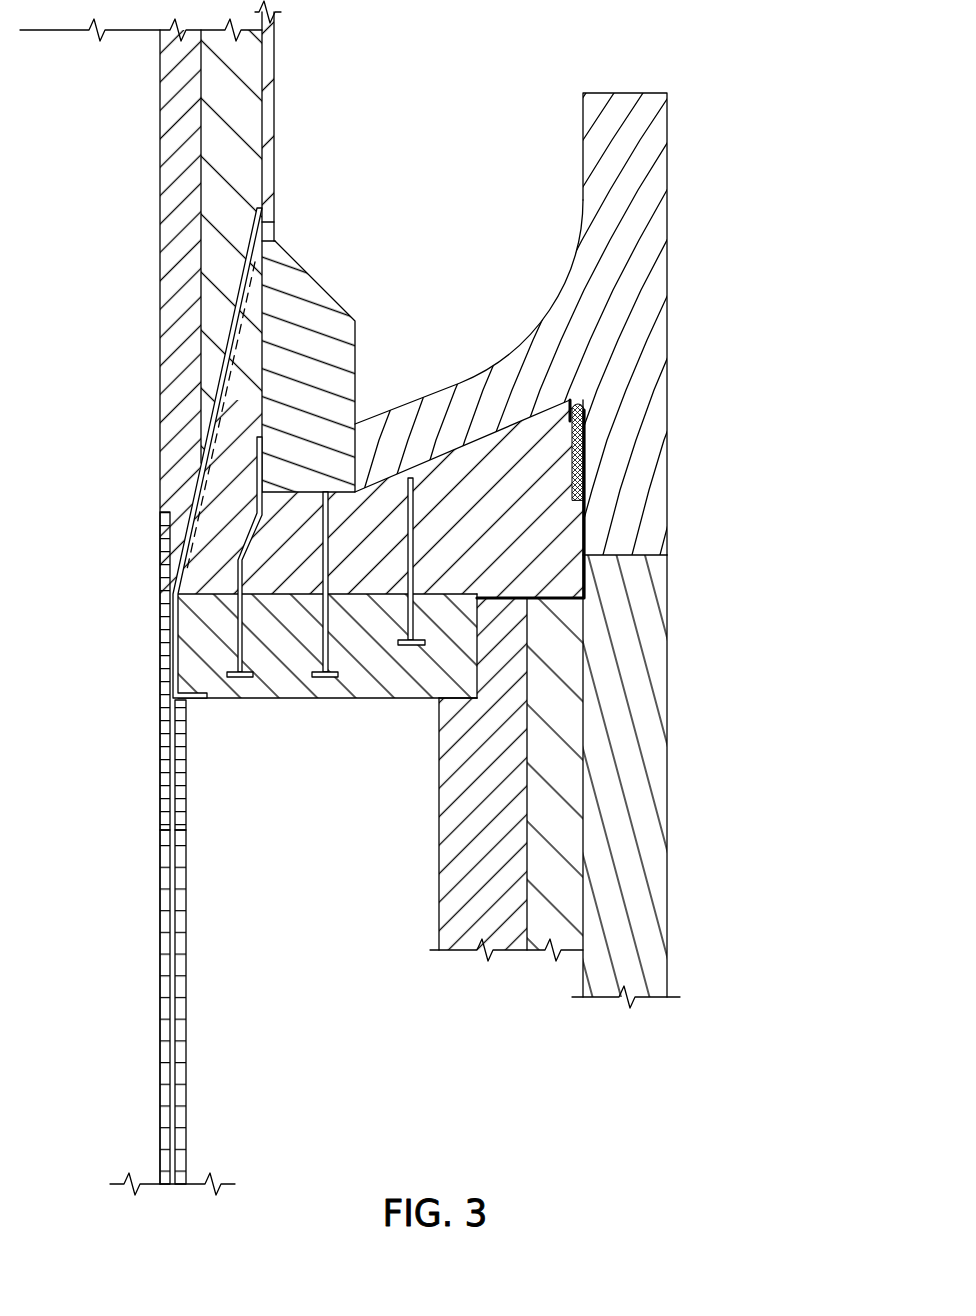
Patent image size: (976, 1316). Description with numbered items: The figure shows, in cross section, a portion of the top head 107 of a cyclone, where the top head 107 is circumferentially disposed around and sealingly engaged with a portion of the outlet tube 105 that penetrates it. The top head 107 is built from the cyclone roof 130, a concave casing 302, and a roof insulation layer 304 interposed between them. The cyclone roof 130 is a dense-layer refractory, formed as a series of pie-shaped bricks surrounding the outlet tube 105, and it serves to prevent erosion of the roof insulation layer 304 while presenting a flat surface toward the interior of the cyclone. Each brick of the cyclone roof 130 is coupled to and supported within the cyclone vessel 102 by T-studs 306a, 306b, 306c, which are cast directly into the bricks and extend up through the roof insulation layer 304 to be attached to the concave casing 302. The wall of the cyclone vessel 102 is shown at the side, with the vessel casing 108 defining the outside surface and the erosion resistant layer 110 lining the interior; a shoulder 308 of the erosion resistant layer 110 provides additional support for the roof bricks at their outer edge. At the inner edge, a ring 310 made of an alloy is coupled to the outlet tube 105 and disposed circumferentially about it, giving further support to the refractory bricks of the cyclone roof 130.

The cyclone vessel 102 is at (678, 770).
The outlet tube 105 is at (187, 1094).
The top head 107 is at (734, 168).
The vessel casing 108 is at (652, 855).
The erosion resistant layer 110 is at (461, 930).
The cyclone roof 130 is at (368, 680).
The concave casing 302 is at (503, 383).
The roof insulation layer 304 is at (548, 533).
The T-stud 306a is at (235, 683).
The T-stud 306b is at (323, 683).
The T-stud 306c is at (409, 478).
The shoulder 308 is at (457, 698).
The ring 310 is at (187, 692).